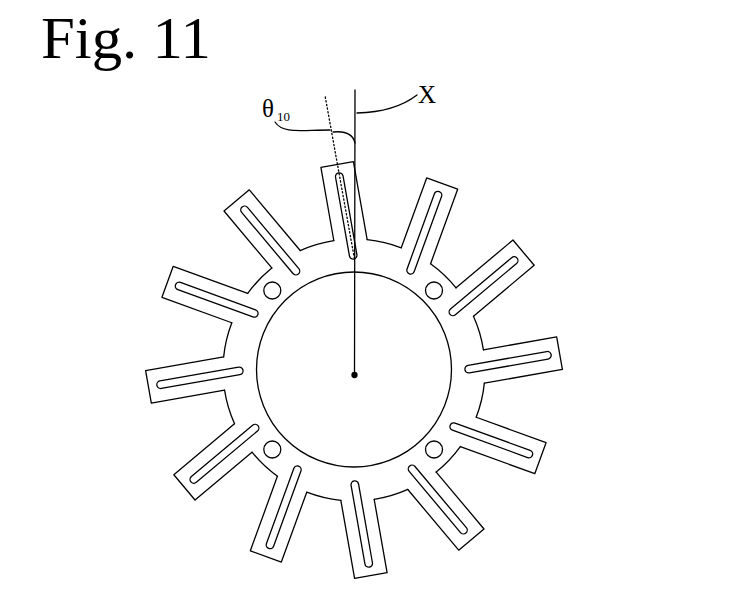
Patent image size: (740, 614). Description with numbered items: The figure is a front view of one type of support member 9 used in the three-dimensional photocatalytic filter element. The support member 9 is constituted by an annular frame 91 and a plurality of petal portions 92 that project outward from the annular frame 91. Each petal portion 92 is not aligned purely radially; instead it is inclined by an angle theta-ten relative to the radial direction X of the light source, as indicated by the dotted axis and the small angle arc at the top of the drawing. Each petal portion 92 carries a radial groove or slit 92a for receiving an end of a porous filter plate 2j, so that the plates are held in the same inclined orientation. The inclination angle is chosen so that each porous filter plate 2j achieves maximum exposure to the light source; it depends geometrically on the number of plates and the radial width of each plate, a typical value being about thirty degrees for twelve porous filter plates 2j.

The support member 9 is at (364, 349).
The annular frame 91 is at (233, 410).
The petal portion 92 is at (558, 349).
The radial groove or slit 92a is at (497, 283).
The porous filter plate 2j is at (335, 200).